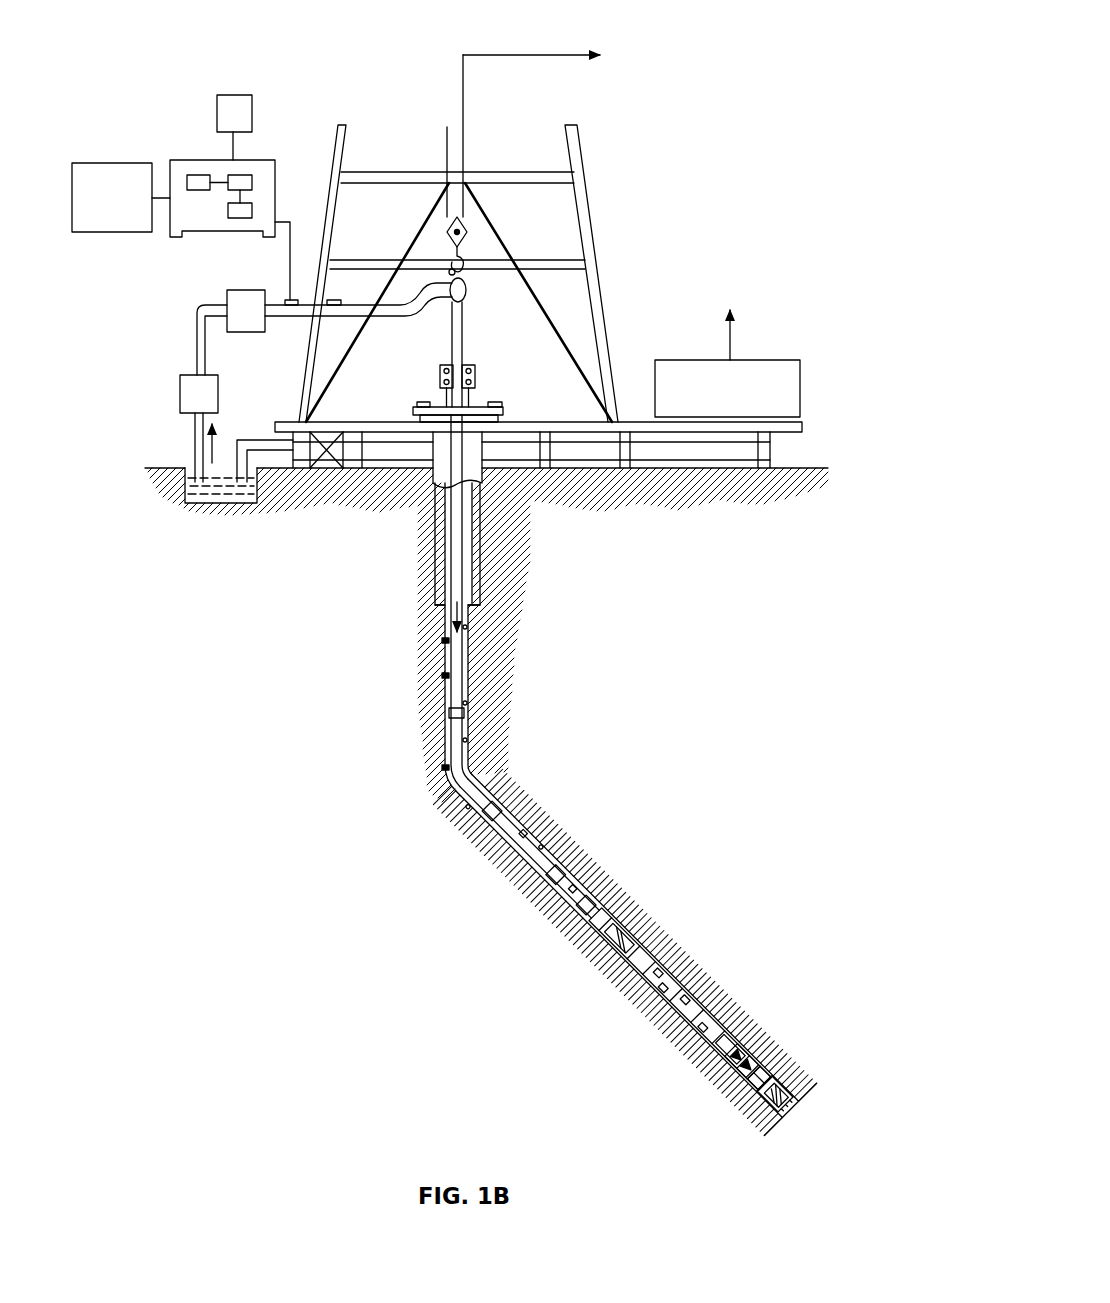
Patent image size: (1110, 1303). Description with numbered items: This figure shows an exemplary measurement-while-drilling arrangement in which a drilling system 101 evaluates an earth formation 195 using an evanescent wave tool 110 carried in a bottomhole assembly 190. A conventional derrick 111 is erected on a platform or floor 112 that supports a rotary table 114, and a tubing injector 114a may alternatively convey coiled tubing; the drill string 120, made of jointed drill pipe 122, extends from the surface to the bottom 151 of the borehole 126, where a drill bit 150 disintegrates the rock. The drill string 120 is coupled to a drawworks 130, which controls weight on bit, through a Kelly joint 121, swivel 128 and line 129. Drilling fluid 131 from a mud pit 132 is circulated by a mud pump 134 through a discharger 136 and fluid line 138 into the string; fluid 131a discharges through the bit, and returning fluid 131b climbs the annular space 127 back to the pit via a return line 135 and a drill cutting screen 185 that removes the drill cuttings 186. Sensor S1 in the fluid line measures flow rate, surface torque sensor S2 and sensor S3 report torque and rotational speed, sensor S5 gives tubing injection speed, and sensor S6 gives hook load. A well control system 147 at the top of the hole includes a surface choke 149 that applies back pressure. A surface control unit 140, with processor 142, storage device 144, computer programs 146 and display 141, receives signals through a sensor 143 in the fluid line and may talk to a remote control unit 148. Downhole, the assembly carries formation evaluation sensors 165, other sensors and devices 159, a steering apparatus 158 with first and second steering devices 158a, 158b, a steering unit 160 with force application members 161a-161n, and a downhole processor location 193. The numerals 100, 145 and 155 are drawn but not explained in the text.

The bottomhole assembly 100 is at (708, 1027).
The drilling system 101 is at (715, 38).
The tool 110 is at (190, 135).
The derrick 111 is at (598, 273).
The platform or floor 112 is at (620, 422).
The rotary table 114 is at (485, 414).
The tubing injector 114a is at (475, 377).
The drill string 120 is at (470, 680).
The Kelly joint 121 is at (463, 350).
The jointed drill pipe 122 is at (443, 670).
The borehole 126 is at (473, 753).
The annular space 127 is at (497, 802).
The swivel 128 is at (447, 303).
The line 129 is at (463, 153).
The drawworks 130 is at (770, 360).
The drilling fluid 131 is at (189, 446).
The drilling fluid 131a is at (445, 608).
The returning drilling fluid 131b is at (445, 790).
The mud pit 132 is at (215, 483).
The mud pump 134 is at (180, 390).
The return line 135 is at (387, 453).
The discharger 136 is at (228, 298).
The fluid line 138 is at (298, 320).
The surface control unit 140 is at (213, 185).
The display/monitor 141 is at (232, 95).
The processor 142 is at (190, 175).
The sensor 143 is at (290, 300).
The storage device 144 is at (242, 175).
The rig floor sensor 145 is at (527, 423).
The computer programs 146 is at (240, 218).
The well control system 147 is at (427, 378).
The remote control unit 148 is at (110, 163).
The surface choke 149 is at (482, 462).
The drill bit 150 is at (785, 1065).
The bottom of the borehole 151 is at (773, 1137).
The annulus 155 is at (553, 833).
The steering apparatus 158 is at (725, 1070).
The first steering device 158a is at (733, 1083).
The second steering device 158b is at (720, 1070).
The sensors and devices 159 is at (743, 1100).
The steering unit 160 is at (710, 1065).
The force application members 161a-161n is at (745, 1045).
The formation evaluation sensors 165 is at (635, 978).
The drill cutting screen 185 is at (315, 422).
The drill cuttings 186 is at (467, 625).
The bottomhole assembly 190 is at (688, 835).
The downhole processor location 193 is at (577, 923).
The earth formation 195 is at (755, 910).
The sensor S1 is at (338, 299).
The surface torque sensor S2 is at (496, 402).
The sensor S3 is at (423, 402).
The sensor S5 is at (463, 318).
The sensor S6 is at (452, 273).